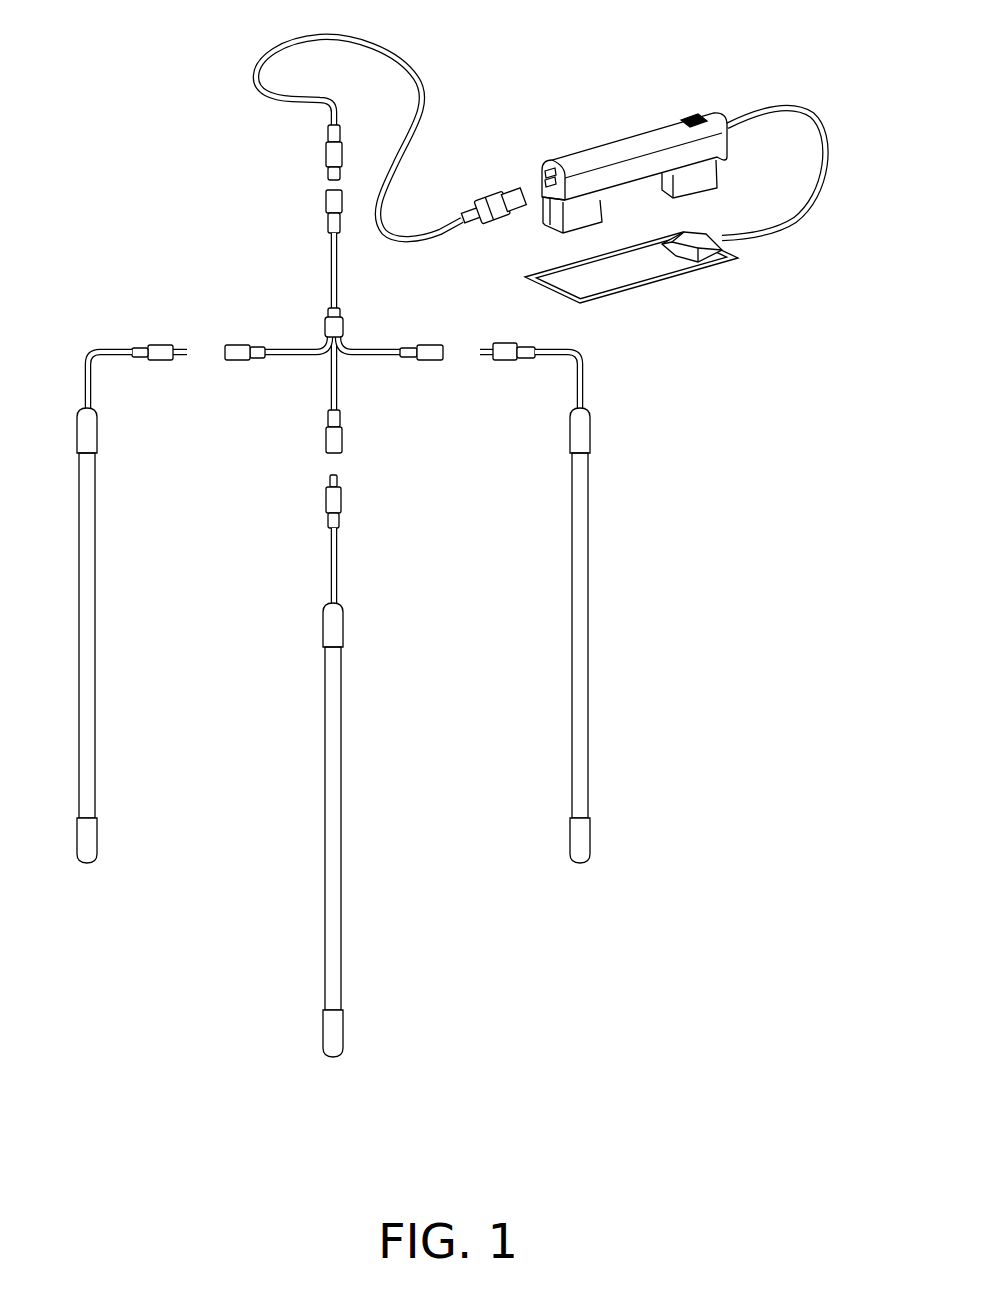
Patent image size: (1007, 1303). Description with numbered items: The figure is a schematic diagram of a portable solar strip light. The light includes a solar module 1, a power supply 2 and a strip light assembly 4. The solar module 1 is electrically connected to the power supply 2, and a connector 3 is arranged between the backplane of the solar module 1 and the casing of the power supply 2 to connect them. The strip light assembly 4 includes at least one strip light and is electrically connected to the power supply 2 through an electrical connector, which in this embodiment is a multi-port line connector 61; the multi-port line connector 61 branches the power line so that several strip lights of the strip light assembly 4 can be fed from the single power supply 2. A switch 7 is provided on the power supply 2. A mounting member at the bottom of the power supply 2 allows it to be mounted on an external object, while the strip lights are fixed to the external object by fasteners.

The solar module 1 is at (683, 300).
The power supply 2 is at (634, 116).
The connector 3 is at (777, 240).
The strip light assembly 4 is at (603, 538).
The multi-port line connector 61 is at (313, 312).
The switch 7 is at (688, 110).